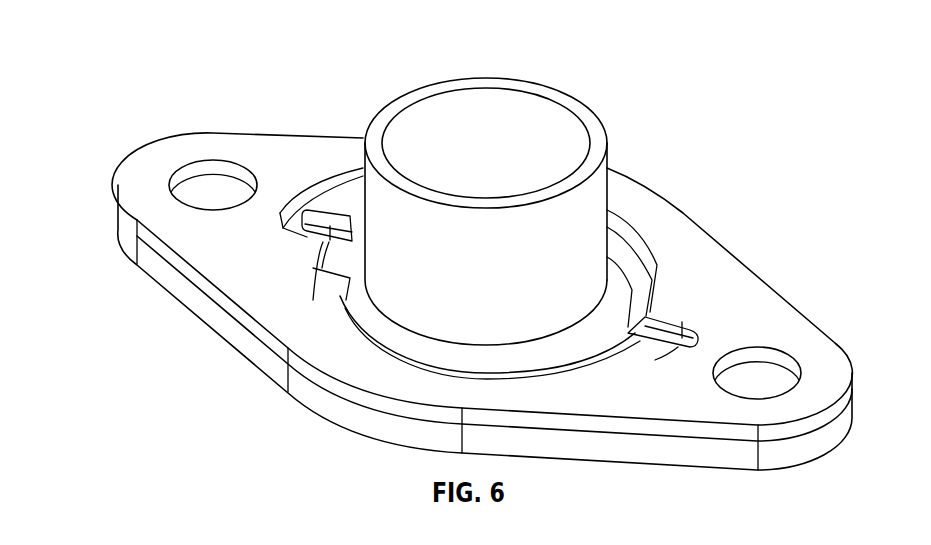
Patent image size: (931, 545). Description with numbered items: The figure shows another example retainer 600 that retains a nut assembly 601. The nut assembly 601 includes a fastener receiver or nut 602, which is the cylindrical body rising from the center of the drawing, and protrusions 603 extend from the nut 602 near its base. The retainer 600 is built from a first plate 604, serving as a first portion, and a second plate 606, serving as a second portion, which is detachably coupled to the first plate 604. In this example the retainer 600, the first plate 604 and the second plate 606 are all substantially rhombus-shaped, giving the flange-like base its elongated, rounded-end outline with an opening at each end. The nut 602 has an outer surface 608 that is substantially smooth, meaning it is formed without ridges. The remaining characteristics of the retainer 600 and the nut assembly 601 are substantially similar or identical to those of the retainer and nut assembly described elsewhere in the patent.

The retainer 600 is at (231, 32).
The nut assembly 601 is at (521, 190).
The nut 602 is at (563, 100).
The protrusions 603 is at (353, 253).
The first plate 604 is at (446, 301).
The second plate 606 is at (127, 213).
The outer surface 608 is at (600, 187).